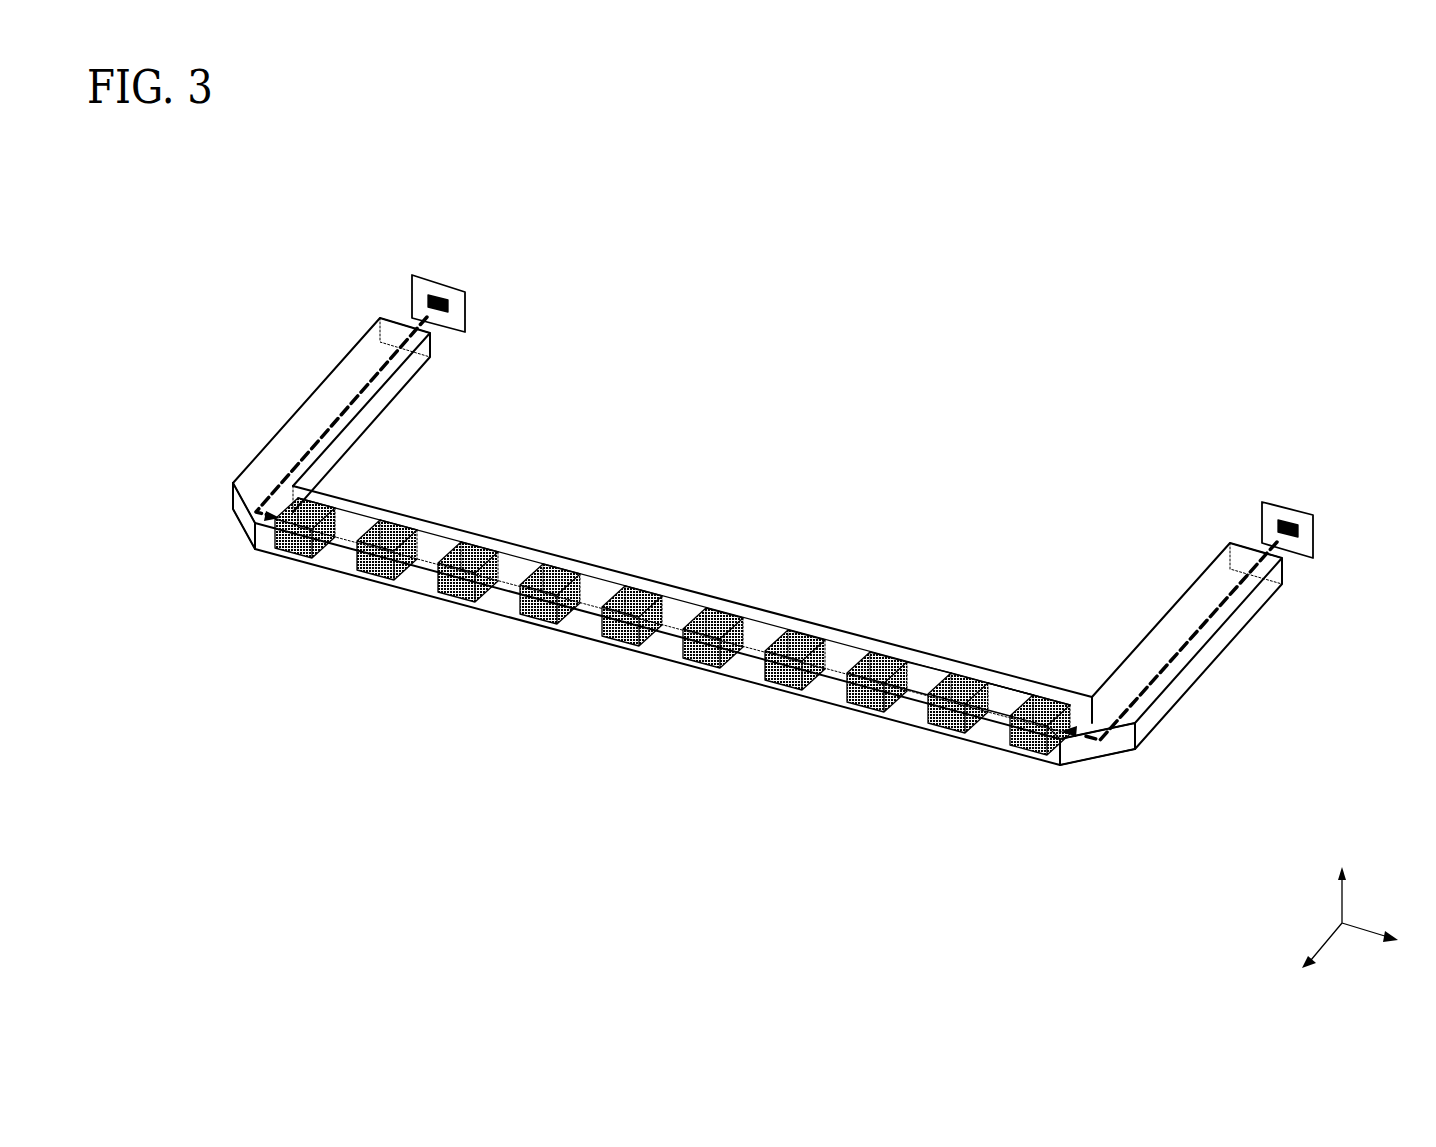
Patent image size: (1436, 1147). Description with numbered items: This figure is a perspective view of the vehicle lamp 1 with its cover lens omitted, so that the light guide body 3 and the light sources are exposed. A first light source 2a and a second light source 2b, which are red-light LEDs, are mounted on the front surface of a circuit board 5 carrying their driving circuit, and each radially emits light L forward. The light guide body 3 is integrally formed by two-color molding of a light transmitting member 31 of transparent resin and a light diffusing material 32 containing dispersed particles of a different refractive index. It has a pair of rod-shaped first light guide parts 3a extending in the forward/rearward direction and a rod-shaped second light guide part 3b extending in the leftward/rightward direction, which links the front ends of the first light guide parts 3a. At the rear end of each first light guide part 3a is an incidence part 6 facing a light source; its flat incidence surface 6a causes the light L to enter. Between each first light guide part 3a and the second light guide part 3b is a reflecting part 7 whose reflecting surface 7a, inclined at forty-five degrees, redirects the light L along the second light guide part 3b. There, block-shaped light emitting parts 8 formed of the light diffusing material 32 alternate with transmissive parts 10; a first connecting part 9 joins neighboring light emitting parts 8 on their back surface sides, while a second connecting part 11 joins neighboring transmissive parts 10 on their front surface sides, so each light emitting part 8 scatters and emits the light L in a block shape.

The vehicle lamp 1 is at (404, 173).
The first light source 2a is at (437, 296).
The second light source 2b is at (1290, 518).
The light guide body 3 is at (744, 578).
The first light guide part 3a is at (298, 405).
The second light guide part 3b is at (665, 660).
The circuit board 5 is at (412, 300).
The incidence part 6 is at (831, 435).
The incidence surface 6a is at (390, 335).
The reflecting part 7 is at (700, 664).
The reflecting surface 7a is at (248, 518).
The light emitting part 8 is at (933, 717).
The first connecting part 9 is at (1003, 683).
The transmissive part 10 is at (915, 687).
The second connecting part 11 is at (955, 732).
The light transmitting member 31 is at (789, 592).
The light diffusing material 32 is at (683, 705).
The light L is at (313, 442).